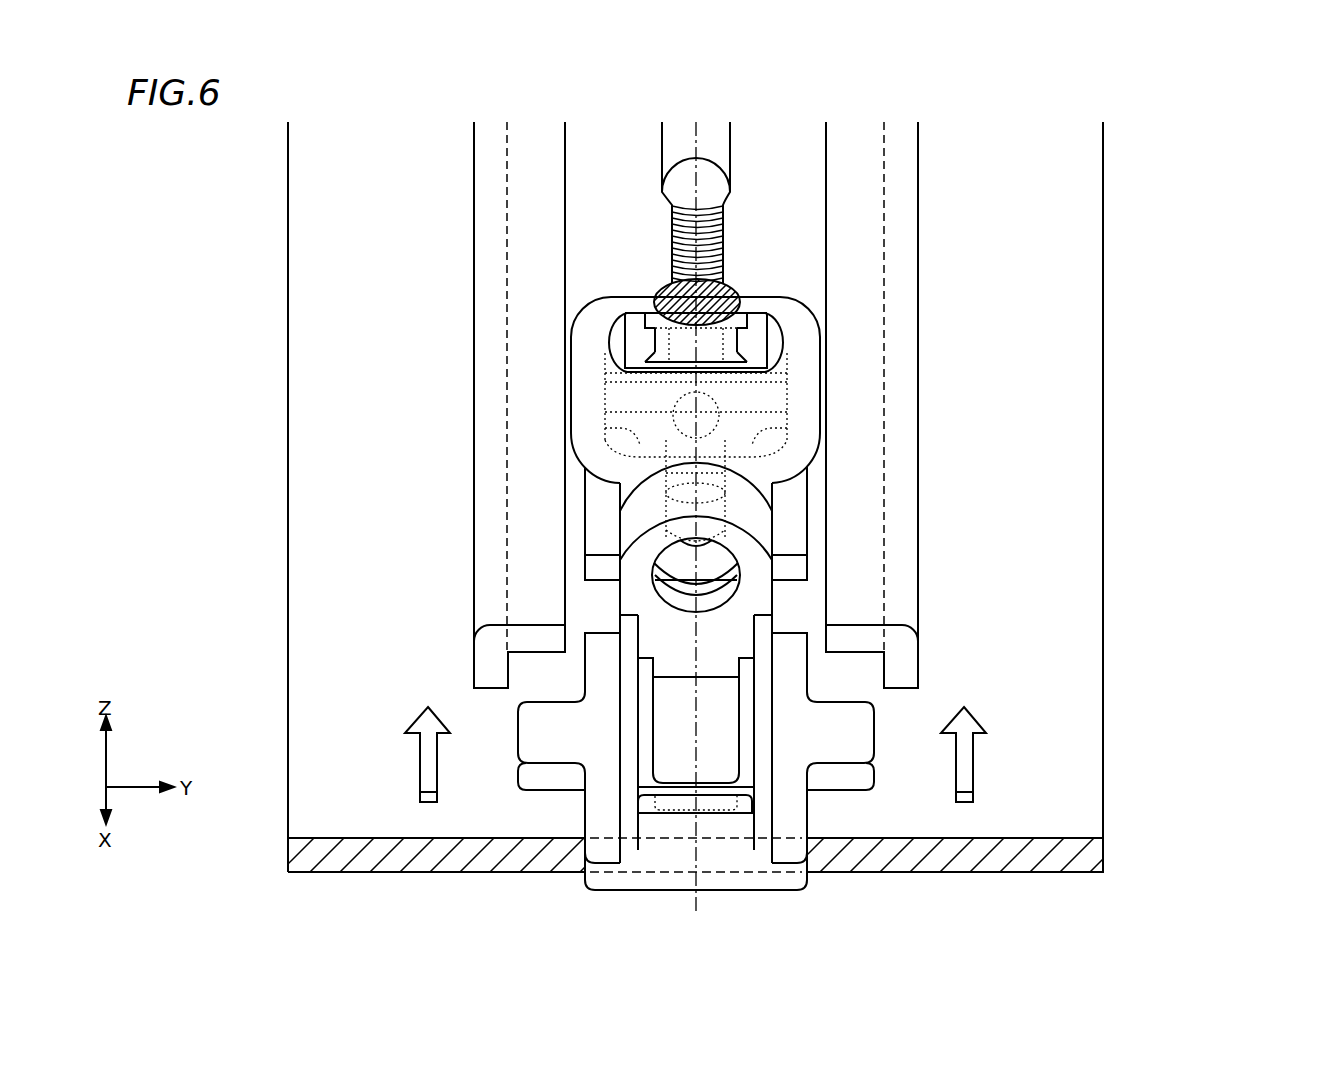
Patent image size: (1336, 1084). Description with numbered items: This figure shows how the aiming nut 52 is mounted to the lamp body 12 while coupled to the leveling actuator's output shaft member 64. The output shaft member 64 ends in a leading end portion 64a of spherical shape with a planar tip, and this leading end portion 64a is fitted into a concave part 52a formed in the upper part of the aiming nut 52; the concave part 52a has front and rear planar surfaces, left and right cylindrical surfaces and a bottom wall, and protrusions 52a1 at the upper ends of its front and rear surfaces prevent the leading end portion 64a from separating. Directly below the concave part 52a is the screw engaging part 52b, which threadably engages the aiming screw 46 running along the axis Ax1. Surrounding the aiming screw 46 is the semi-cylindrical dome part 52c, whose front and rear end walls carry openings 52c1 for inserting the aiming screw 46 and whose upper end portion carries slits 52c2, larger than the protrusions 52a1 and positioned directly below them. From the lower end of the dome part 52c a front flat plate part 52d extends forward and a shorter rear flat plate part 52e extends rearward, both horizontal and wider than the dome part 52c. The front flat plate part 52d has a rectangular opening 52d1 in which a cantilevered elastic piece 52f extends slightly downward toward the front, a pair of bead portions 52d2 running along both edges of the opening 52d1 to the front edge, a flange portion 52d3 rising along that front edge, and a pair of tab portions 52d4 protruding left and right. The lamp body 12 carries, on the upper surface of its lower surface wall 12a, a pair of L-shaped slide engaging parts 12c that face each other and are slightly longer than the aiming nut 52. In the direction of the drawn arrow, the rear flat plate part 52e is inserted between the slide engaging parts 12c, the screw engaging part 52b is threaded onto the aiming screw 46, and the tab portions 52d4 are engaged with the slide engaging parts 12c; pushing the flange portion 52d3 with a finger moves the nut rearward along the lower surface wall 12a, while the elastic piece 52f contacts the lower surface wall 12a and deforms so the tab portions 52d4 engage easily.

The lamp body 12 is at (1105, 505).
The lower surface wall 12a is at (347, 388).
The slide engaging parts 12c is at (490, 308).
The axis Ax1 is at (697, 135).
The aiming screw 46 is at (727, 227).
The aiming nut 52 is at (821, 412).
The concave part 52a is at (582, 403).
The protrusions 52a1 is at (656, 362).
The screw engaging part 52b is at (700, 560).
The dome part 52c is at (627, 533).
The openings 52c1 is at (680, 598).
The slits 52c2 is at (605, 428).
The front flat plate part 52d is at (792, 662).
The opening 52d1 is at (645, 722).
The bead portions 52d2 is at (625, 722).
The flange portion 52d3 is at (745, 800).
The tab portions 52d4 is at (537, 727).
The rear flat plate part 52e is at (792, 515).
The elastic piece 52f is at (713, 722).
The output shaft member 64 is at (733, 337).
The leading end portion 64a is at (792, 442).